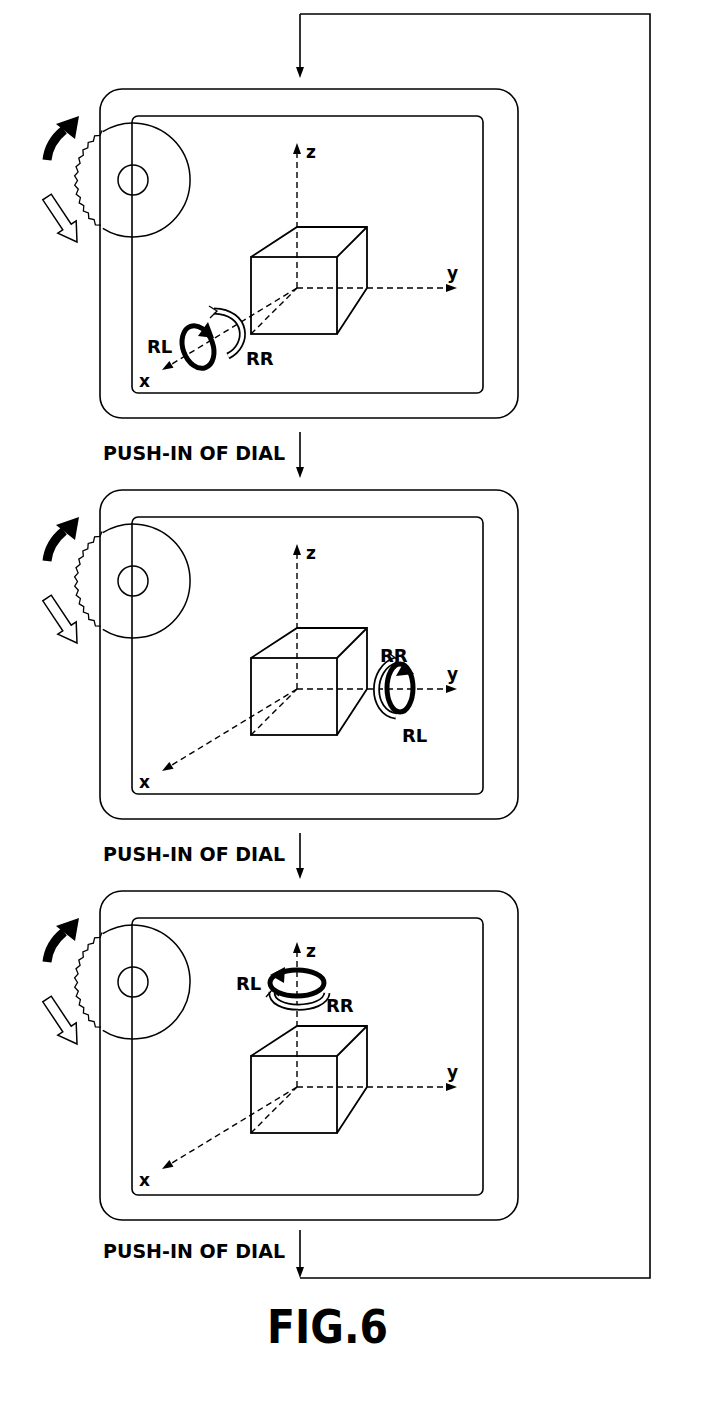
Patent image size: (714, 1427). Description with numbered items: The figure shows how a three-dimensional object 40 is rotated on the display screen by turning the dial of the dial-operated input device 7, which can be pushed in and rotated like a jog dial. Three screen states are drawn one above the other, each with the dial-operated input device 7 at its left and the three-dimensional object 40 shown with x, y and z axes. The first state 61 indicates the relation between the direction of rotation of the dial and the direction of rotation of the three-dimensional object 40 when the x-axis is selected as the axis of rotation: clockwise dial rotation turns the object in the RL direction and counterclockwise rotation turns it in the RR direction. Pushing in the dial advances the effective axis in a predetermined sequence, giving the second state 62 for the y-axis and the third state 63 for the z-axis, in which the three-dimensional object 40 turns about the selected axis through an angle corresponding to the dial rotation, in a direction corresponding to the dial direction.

The dial-operated input device 7 is at (84, 106).
The three-dimensional object 40 is at (352, 226).
The relation for x-axis rotation 61 is at (532, 104).
The relation for y-axis rotation 62 is at (524, 493).
The relation for z-axis rotation 63 is at (524, 900).